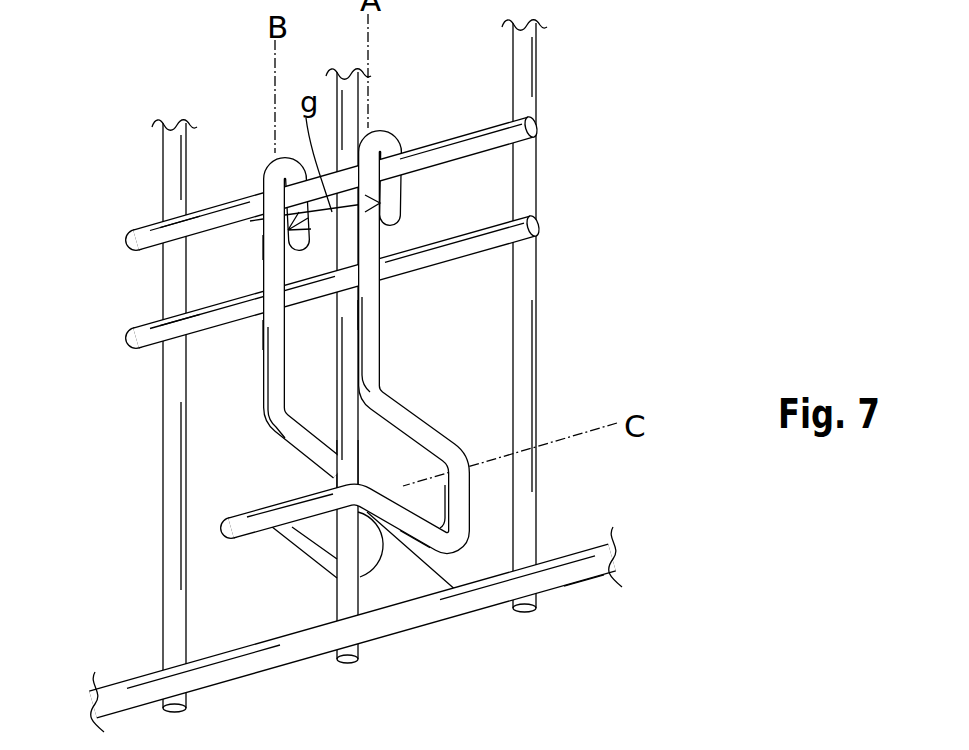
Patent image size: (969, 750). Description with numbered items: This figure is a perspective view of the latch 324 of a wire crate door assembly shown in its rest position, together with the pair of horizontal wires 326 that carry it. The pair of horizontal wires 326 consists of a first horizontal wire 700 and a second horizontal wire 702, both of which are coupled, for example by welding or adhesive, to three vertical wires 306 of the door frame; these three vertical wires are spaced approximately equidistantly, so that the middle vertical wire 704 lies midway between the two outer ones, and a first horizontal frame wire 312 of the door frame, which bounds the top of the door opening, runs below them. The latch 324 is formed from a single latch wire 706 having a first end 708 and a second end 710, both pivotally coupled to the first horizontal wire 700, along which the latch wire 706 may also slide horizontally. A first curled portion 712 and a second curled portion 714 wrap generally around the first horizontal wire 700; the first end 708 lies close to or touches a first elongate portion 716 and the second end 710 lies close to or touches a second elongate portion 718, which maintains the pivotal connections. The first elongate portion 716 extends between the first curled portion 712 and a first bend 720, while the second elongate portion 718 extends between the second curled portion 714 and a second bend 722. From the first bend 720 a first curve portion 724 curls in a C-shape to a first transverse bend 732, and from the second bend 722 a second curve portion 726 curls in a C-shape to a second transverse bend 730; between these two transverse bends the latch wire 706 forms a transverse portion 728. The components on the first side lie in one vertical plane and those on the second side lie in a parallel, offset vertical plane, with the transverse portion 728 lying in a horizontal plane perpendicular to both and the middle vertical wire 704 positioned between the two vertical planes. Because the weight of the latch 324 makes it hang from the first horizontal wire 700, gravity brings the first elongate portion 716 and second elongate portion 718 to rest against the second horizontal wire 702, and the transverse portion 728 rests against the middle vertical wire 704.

The vertical frame wire 306 is at (166, 418).
The first horizontal frame wire 312 is at (571, 574).
The latch 324 is at (565, 422).
The pair of horizontal wires 326 is at (496, 226).
The first horizontal wire 700 is at (497, 130).
The second horizontal wire 702 is at (498, 237).
The middle vertical wire 704 is at (347, 592).
The latch wire 706 is at (265, 272).
The first end 708 is at (262, 248).
The second end 710 is at (381, 232).
The first curled portion 712 is at (267, 167).
The second curled portion 714 is at (386, 140).
The first elongate portion 716 is at (266, 337).
The second elongate portion 718 is at (374, 314).
The first bend 720 is at (273, 416).
The second bend 722 is at (378, 394).
The first curve portion 724 is at (366, 557).
The second curve portion 726 is at (463, 530).
The transverse portion 728 is at (277, 527).
The second transverse bend 730 is at (450, 563).
The first transverse bend 732 is at (222, 524).